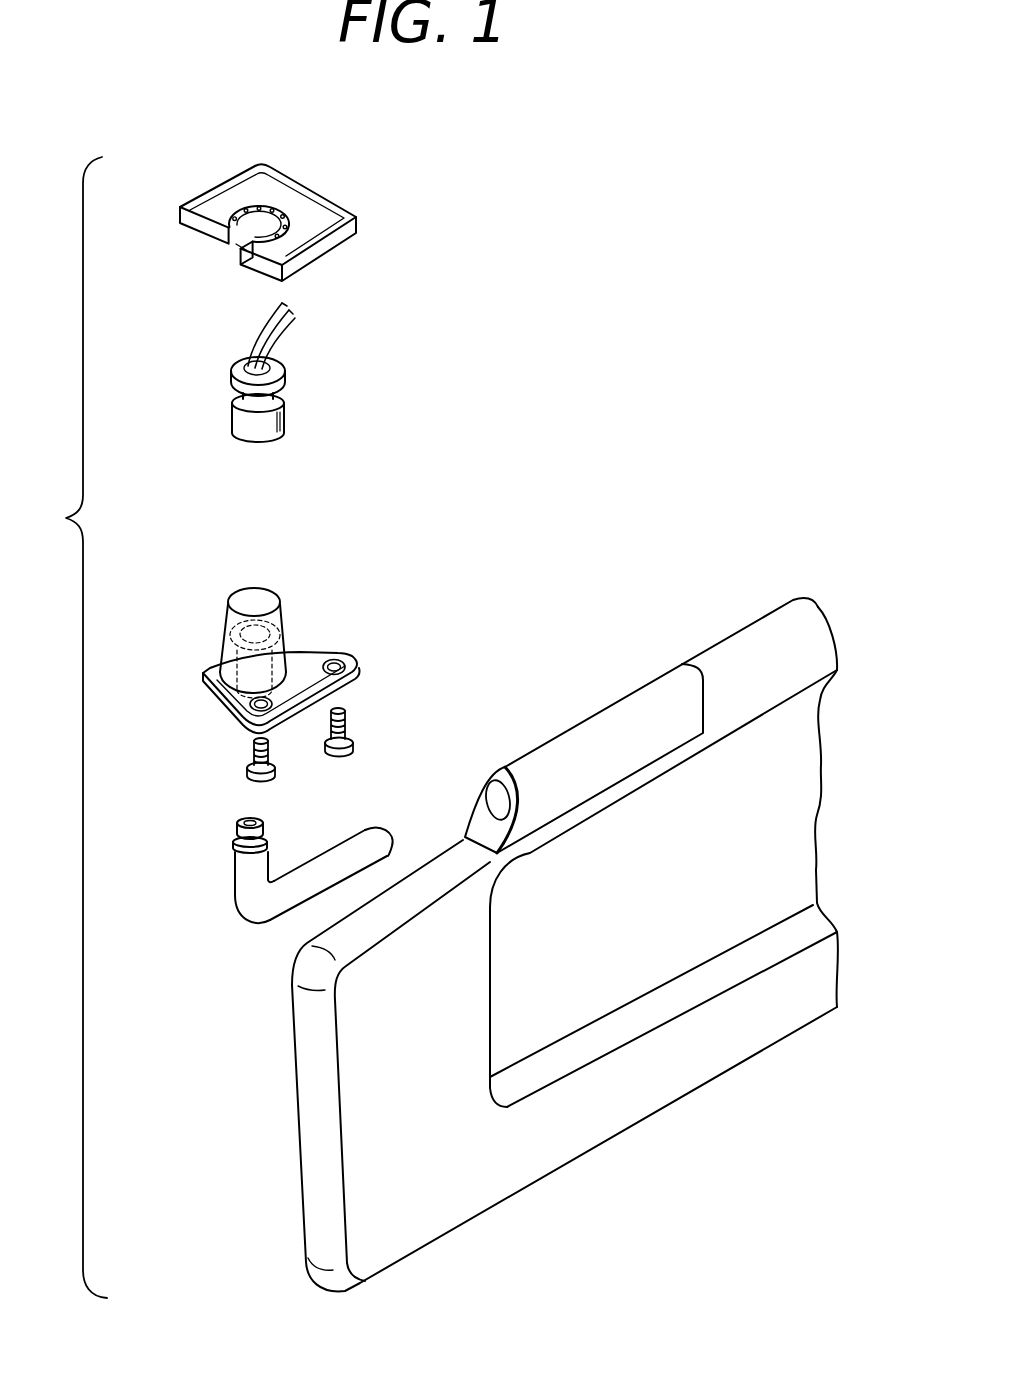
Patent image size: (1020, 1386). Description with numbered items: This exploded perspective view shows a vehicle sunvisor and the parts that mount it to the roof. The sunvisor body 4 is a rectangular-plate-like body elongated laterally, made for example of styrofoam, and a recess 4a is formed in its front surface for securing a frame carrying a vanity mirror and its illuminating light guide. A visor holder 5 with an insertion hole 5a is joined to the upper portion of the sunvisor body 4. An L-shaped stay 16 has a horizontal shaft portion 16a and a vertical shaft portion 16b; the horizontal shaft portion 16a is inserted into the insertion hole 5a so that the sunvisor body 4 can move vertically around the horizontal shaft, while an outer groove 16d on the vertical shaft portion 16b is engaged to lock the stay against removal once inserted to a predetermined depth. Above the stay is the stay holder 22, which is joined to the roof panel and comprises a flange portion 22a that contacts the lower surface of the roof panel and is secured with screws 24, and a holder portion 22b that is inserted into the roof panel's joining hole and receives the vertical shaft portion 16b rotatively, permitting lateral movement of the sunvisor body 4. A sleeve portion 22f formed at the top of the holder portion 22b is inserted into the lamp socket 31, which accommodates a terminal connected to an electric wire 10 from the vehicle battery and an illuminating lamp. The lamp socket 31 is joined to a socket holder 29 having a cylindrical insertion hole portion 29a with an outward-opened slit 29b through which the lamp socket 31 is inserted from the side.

The sunvisor body 4 is at (565, 944).
The recess 4a is at (718, 927).
The visor holder 5 is at (641, 725).
The insertion hole 5a is at (492, 778).
The electric wire 10 is at (270, 347).
The stay 16 is at (268, 887).
The horizontal shaft portion 16a is at (357, 847).
The vertical shaft portion 16b is at (240, 877).
The outer groove 16d is at (233, 842).
The stay holder 22 is at (282, 627).
The flange portion 22a is at (347, 662).
The holder portion 22b is at (287, 632).
The sleeve portion 22f is at (255, 598).
The screws 24 is at (347, 723).
The socket holder 29 is at (302, 222).
The insertion hole portion 29a is at (273, 210).
The slit 29b is at (250, 230).
The lamp socket 31 is at (240, 417).